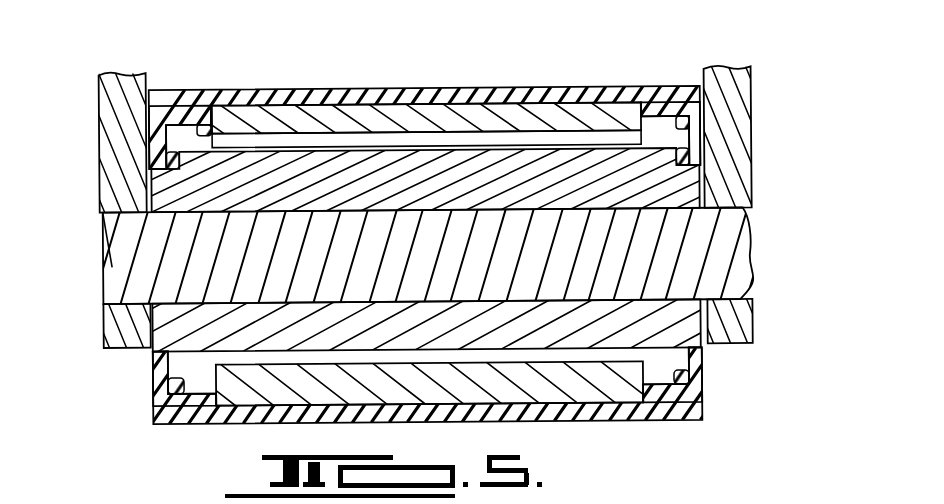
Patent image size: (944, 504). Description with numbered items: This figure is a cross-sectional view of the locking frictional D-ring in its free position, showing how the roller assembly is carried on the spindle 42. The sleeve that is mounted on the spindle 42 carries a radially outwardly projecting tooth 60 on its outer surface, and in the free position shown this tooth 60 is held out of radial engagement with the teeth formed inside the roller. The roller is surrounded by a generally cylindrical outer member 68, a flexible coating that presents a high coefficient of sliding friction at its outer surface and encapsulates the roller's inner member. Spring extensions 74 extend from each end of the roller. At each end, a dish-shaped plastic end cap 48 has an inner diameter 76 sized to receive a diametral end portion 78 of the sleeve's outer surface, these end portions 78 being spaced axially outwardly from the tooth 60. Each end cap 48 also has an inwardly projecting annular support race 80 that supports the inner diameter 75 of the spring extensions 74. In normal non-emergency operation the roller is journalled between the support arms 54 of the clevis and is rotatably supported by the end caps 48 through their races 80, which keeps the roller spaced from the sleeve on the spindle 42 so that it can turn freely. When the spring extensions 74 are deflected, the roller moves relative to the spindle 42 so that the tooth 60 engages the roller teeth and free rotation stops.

The spindle 42 is at (740, 250).
The end cap 48 is at (150, 88).
The support arm 54 is at (117, 335).
The tooth 60 is at (405, 157).
The outer member 68 is at (527, 90).
The spring extension 74 is at (188, 99).
The inner diameter of spring extensions 75 is at (197, 128).
The inner diameter 76 is at (150, 172).
The diametral end portion 78 is at (150, 158).
The annular support race 80 is at (212, 102).